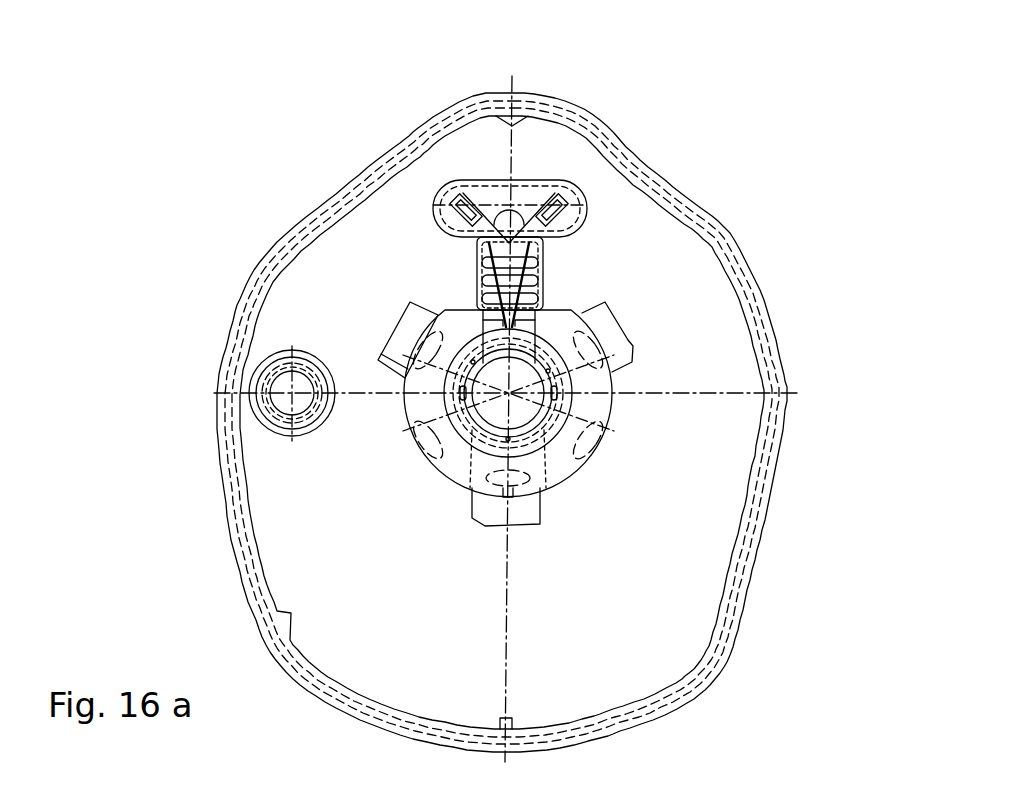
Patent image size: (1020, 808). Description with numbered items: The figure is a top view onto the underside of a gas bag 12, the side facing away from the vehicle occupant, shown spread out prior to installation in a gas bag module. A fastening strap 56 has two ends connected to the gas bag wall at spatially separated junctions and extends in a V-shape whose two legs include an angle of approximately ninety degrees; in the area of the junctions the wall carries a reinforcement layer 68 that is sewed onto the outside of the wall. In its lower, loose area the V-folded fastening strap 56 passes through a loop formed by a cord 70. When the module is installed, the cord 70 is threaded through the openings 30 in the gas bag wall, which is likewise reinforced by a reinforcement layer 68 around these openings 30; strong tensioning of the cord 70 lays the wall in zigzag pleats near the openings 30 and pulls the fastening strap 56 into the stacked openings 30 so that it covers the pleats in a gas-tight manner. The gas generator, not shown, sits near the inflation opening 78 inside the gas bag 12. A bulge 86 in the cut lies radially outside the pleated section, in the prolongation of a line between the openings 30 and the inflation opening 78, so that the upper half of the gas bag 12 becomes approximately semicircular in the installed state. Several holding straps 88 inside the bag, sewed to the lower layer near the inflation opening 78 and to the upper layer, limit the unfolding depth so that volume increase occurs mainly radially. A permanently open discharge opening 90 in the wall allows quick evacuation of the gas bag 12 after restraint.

The gas bag 12 is at (734, 341).
The bulge 86 is at (545, 128).
The discharge opening 90 is at (249, 405).
The inflation opening 78 is at (577, 408).
The holding straps 88 is at (406, 312).
The cord 70 is at (545, 292).
The openings 30 is at (490, 306).
The reinforcement layer 68 is at (527, 190).
The fastening strap 56 is at (540, 228).